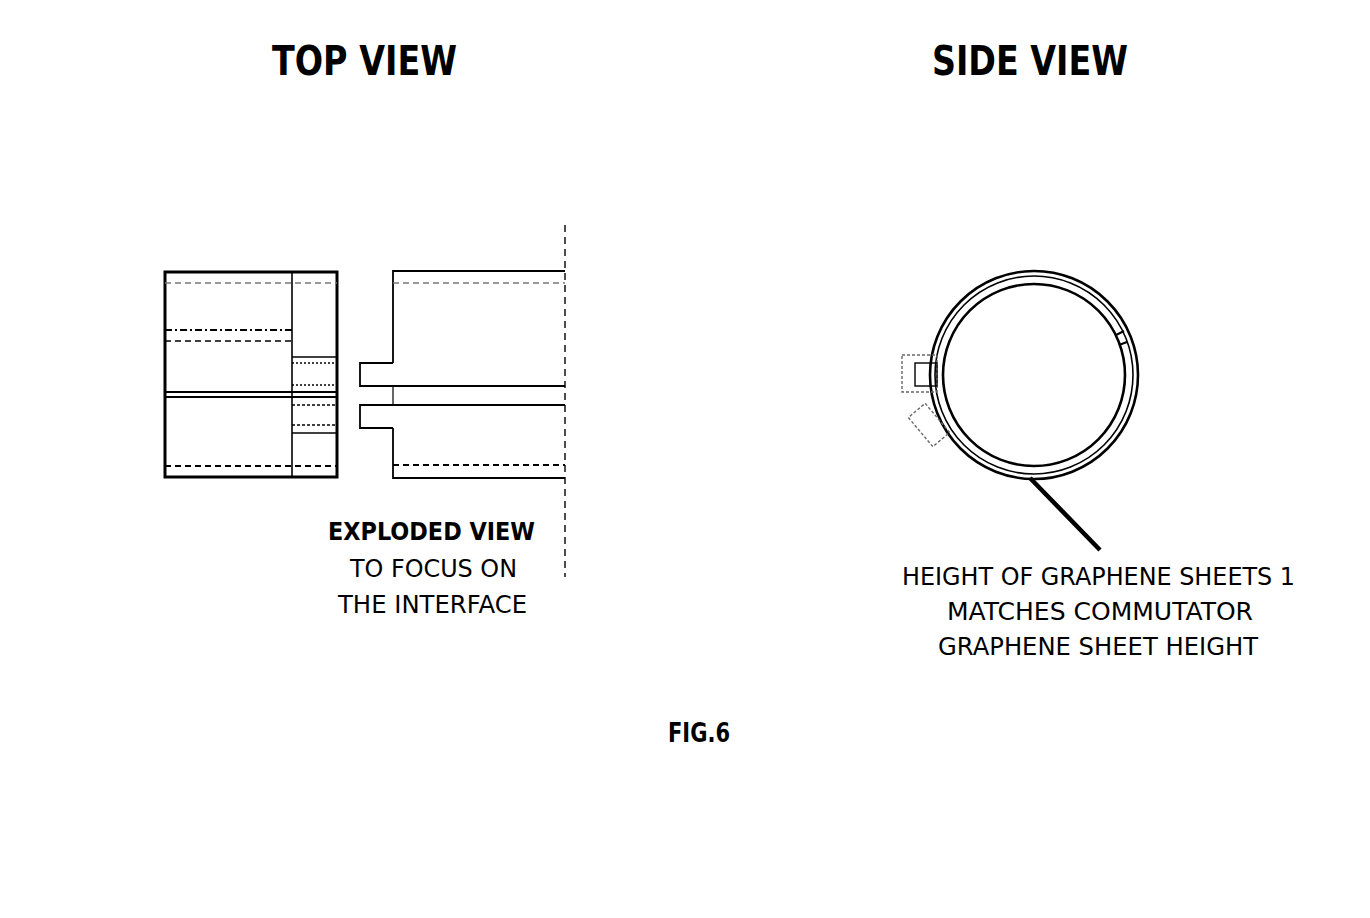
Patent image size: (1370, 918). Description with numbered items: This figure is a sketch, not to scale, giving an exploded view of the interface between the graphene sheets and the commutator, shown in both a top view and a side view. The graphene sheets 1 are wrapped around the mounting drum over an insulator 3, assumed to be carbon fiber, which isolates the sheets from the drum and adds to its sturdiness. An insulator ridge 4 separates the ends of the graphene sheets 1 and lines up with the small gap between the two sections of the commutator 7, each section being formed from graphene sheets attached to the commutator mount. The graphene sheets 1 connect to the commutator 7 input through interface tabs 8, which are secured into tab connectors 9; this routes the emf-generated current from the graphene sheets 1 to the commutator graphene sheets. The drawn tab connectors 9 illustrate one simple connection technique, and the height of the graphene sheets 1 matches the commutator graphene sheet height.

The graphene sheets 1 is at (515, 270).
The insulator 3 is at (1032, 283).
The insulator ridge 4 is at (570, 395).
The commutator 7 is at (1158, 405).
The interface tabs 8 is at (365, 362).
The tab connectors 9 is at (905, 355).